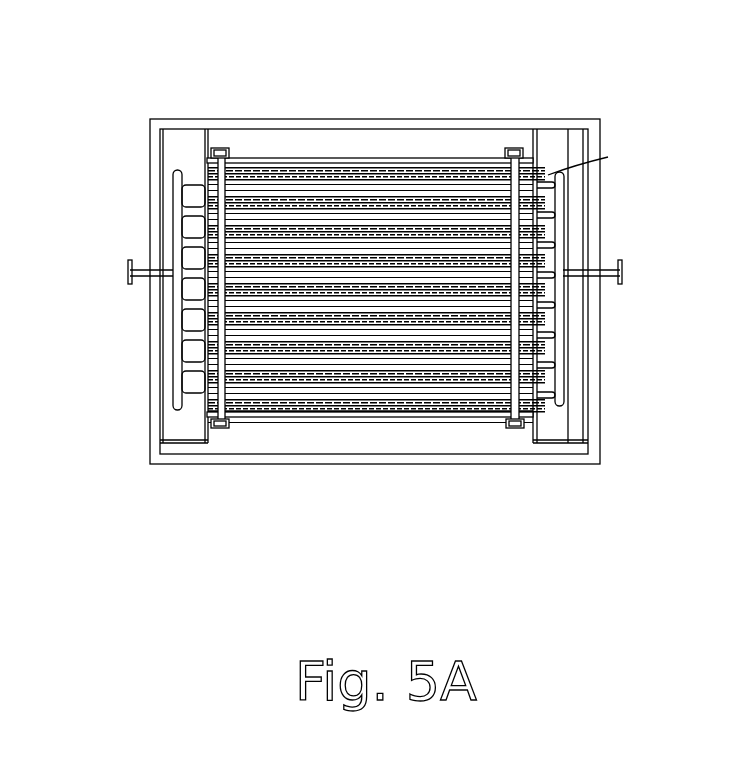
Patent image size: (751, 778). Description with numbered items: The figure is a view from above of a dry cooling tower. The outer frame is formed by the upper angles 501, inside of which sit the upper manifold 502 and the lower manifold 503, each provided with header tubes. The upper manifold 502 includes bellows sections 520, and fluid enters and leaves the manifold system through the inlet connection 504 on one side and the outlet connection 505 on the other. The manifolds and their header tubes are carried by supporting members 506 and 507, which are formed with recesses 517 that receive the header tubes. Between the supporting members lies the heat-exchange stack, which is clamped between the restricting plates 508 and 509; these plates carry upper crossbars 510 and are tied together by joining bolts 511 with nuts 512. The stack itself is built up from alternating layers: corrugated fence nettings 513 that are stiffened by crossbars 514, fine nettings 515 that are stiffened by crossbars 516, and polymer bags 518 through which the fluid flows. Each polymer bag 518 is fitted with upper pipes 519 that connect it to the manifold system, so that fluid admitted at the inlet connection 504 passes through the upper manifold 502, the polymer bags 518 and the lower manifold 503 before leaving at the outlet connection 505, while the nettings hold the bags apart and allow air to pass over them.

The upper angles 501 is at (152, 188).
The upper manifold 502 is at (180, 363).
The lower manifold 503 is at (560, 238).
The inlet connection 504 is at (140, 262).
The outlet connection 505 is at (620, 262).
The supporting member 506 is at (207, 323).
The supporting member 507 is at (540, 135).
The restricting plate 508 is at (250, 418).
The restricting plate 509 is at (487, 158).
The upper crossbars 510 is at (278, 160).
The joining bolts 511 is at (513, 386).
The nuts 512 is at (507, 152).
The corrugated fence nettings 513 is at (353, 168).
The crossbars 514 is at (377, 413).
The fine nettings 515 is at (410, 412).
The crossbars 516 is at (462, 398).
The recesses 517 is at (535, 410).
The polymer bags 518 is at (262, 168).
The upper pipes 519 is at (238, 415).
The bellows sections 520 is at (196, 178).